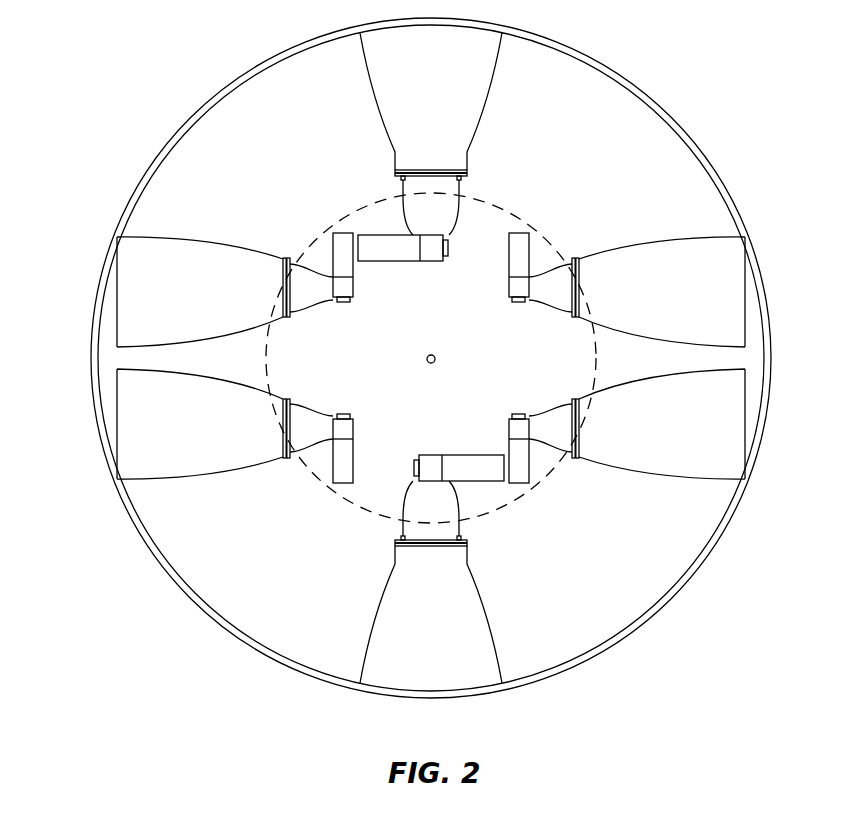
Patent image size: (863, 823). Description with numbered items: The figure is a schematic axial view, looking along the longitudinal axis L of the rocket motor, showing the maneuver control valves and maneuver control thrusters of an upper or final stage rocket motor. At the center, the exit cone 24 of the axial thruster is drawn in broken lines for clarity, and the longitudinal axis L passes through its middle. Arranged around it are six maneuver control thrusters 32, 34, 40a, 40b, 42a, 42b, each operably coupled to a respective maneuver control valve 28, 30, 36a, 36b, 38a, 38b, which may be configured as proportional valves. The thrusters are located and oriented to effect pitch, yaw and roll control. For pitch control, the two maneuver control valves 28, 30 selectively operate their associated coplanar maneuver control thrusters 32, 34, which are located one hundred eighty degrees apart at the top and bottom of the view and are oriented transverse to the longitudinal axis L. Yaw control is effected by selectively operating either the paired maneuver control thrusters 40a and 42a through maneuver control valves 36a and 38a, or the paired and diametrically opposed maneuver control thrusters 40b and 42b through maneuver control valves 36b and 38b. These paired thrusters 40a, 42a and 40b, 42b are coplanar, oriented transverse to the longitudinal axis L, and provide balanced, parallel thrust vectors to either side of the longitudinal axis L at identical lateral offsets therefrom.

The exit cone 24 is at (517, 503).
The maneuver control valve 28 is at (466, 217).
The maneuver control valve 30 is at (407, 490).
The maneuver control thruster 32 is at (498, 85).
The maneuver control thruster 34 is at (498, 643).
The maneuver control valve 36a is at (541, 403).
The maneuver control valve 36b is at (328, 313).
The maneuver control valve 38a is at (543, 316).
The maneuver control valve 38b is at (327, 405).
The maneuver control thruster 40a is at (745, 417).
The maneuver control thruster 40b is at (160, 237).
The maneuver control thruster 42a is at (745, 307).
The maneuver control thruster 42b is at (152, 480).
The longitudinal axis L is at (427, 360).